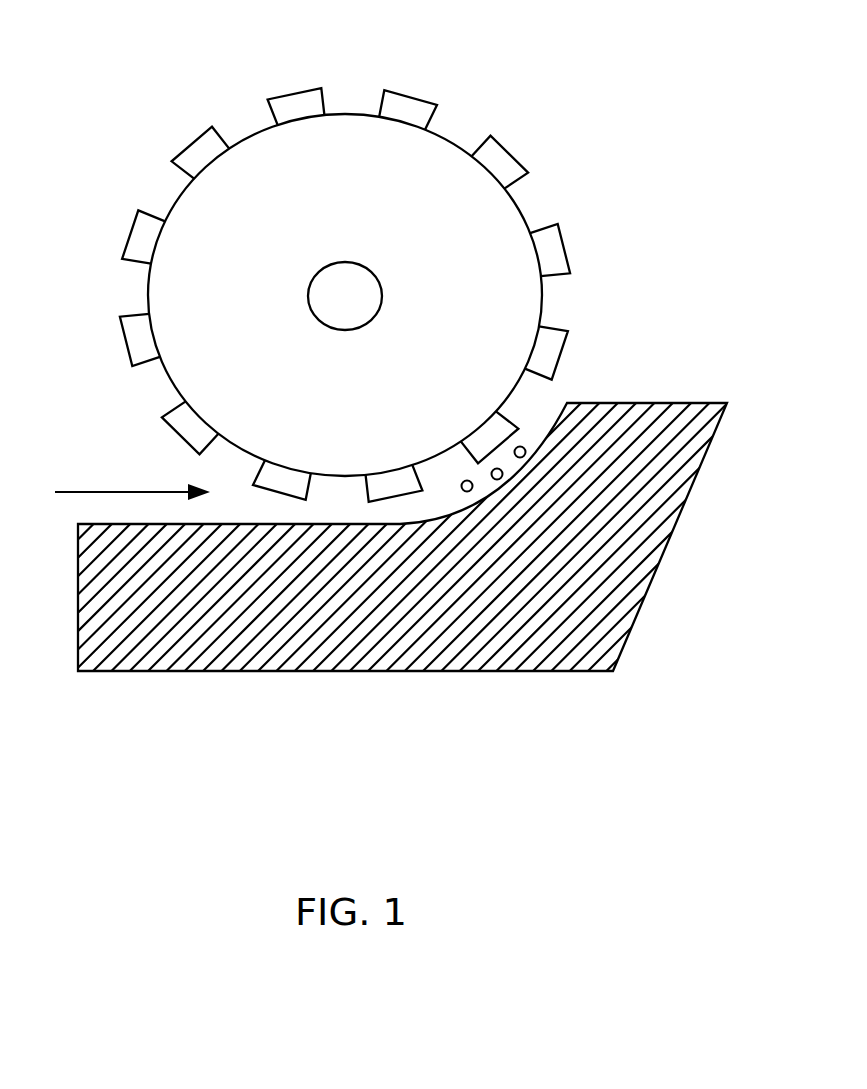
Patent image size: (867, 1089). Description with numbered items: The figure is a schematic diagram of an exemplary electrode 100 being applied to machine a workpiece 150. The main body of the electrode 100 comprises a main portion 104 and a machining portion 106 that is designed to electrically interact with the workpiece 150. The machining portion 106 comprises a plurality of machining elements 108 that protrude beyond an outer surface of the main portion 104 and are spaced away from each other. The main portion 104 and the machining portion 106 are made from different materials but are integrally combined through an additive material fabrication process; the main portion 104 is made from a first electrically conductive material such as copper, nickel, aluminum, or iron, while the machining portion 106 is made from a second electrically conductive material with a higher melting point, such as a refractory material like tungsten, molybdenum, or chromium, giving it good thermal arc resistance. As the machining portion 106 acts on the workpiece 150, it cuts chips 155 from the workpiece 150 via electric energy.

The electrode 100 is at (358, 115).
The main portion 104 is at (493, 238).
The machining portion 106 is at (512, 152).
The machining elements 108 is at (206, 150).
The workpiece 150 is at (597, 635).
The chips 155 is at (523, 447).